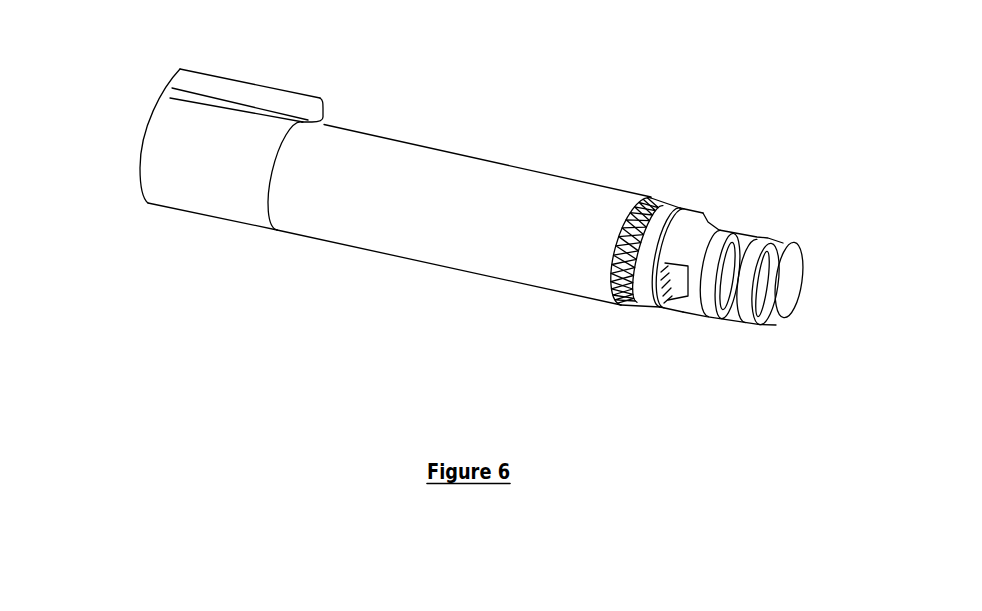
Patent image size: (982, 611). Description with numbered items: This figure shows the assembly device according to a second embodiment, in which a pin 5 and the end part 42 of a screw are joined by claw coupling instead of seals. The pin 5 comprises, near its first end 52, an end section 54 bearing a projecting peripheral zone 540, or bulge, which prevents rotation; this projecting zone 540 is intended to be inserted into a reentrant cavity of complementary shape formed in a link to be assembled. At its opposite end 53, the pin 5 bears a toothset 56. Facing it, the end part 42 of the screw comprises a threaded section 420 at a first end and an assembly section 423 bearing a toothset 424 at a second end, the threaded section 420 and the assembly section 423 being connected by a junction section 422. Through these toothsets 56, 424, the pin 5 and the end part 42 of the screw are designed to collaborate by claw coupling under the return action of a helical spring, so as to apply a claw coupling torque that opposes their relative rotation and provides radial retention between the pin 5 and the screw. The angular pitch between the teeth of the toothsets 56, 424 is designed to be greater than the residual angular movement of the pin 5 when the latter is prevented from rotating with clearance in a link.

The pin 5 is at (362, 153).
The first end 52 is at (118, 154).
The end section 54 is at (197, 180).
The projecting peripheral zone 540 is at (272, 93).
The end 53 is at (664, 188).
The toothset 56 is at (618, 283).
The end part 42 is at (770, 210).
The toothset 424 is at (658, 213).
The assembly section 423 is at (648, 282).
The junction section 422 is at (678, 292).
The threaded section 420 is at (748, 310).